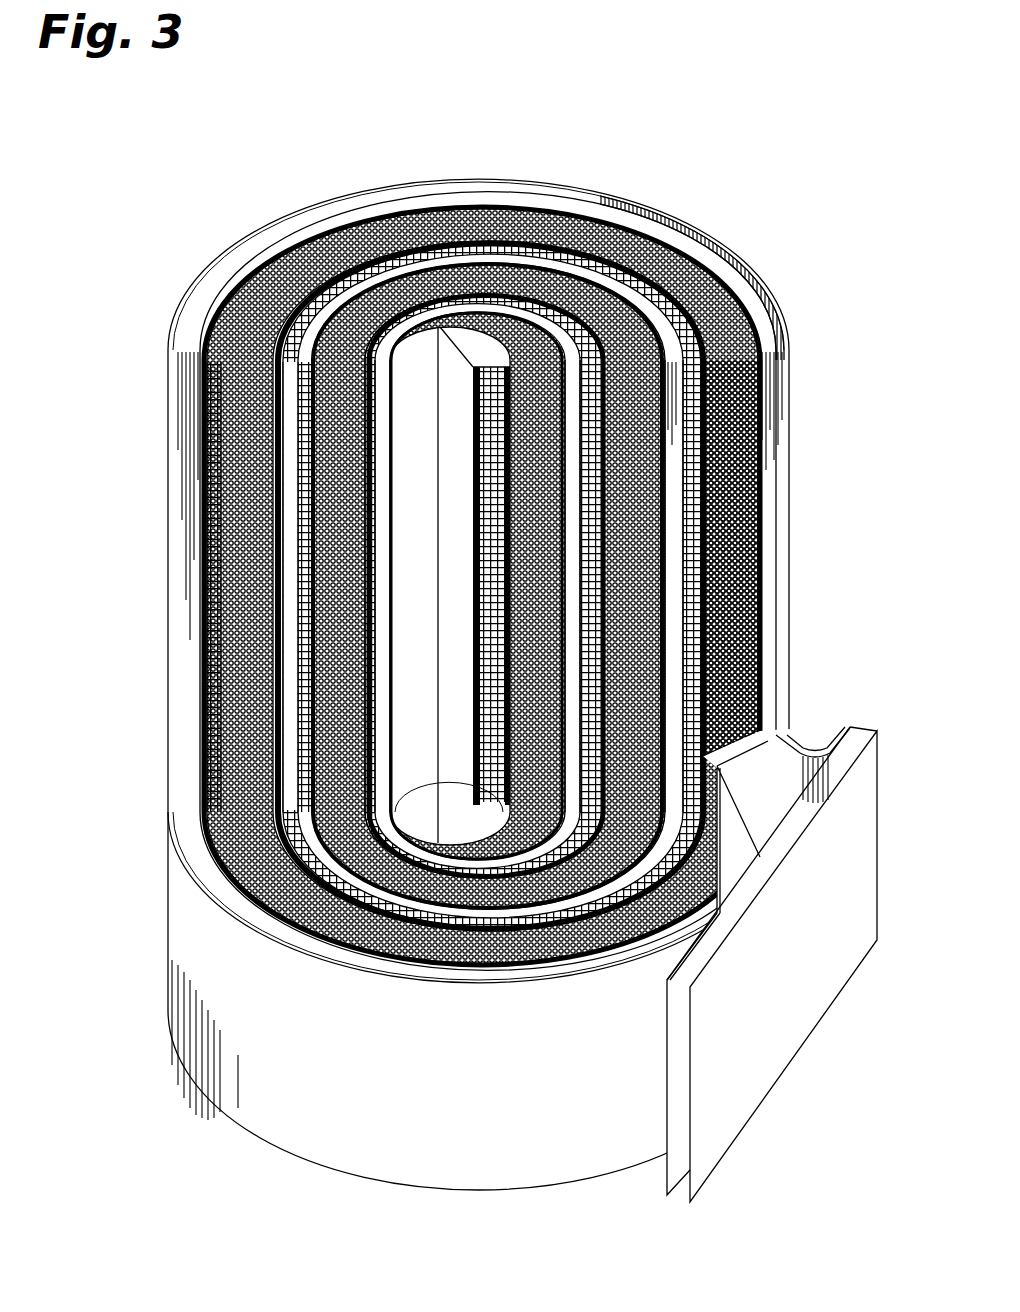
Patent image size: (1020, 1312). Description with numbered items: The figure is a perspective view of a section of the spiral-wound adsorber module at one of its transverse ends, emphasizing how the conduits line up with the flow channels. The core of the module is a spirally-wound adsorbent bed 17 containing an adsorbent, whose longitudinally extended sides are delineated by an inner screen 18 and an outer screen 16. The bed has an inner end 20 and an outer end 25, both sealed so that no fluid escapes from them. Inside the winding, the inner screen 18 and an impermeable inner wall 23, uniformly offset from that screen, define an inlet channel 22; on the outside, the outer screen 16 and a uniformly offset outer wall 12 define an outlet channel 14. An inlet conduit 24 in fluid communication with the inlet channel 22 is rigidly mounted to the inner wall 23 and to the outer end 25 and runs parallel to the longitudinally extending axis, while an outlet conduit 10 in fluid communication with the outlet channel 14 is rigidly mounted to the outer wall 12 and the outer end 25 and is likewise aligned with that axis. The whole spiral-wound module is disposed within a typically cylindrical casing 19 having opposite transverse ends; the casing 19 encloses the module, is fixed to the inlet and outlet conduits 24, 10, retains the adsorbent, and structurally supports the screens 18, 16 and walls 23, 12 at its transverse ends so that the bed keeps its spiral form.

The outlet conduit 10 is at (841, 725).
The outer wall 12 is at (655, 225).
The outlet channel 14 is at (767, 638).
The outer screen 16 is at (558, 213).
The spirally-wound adsorbent bed 17 is at (760, 537).
The inner screen 18 is at (303, 247).
The casing 19 is at (723, 243).
The inner end 20 is at (457, 462).
The inlet channel 22 is at (757, 830).
The inner wall 23 is at (237, 290).
The inlet conduit 24 is at (703, 973).
The outer end 25 is at (748, 775).